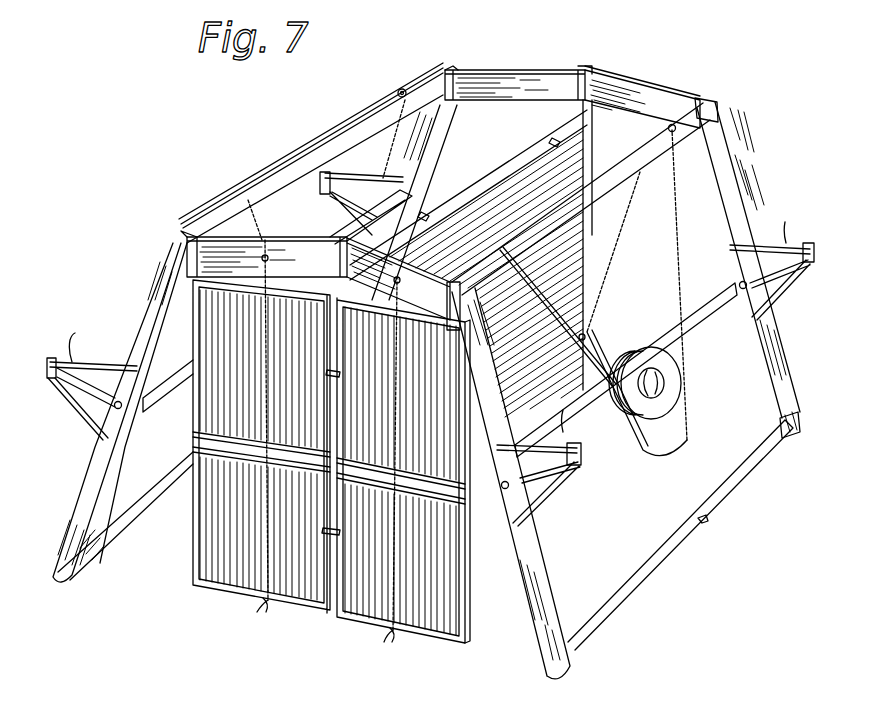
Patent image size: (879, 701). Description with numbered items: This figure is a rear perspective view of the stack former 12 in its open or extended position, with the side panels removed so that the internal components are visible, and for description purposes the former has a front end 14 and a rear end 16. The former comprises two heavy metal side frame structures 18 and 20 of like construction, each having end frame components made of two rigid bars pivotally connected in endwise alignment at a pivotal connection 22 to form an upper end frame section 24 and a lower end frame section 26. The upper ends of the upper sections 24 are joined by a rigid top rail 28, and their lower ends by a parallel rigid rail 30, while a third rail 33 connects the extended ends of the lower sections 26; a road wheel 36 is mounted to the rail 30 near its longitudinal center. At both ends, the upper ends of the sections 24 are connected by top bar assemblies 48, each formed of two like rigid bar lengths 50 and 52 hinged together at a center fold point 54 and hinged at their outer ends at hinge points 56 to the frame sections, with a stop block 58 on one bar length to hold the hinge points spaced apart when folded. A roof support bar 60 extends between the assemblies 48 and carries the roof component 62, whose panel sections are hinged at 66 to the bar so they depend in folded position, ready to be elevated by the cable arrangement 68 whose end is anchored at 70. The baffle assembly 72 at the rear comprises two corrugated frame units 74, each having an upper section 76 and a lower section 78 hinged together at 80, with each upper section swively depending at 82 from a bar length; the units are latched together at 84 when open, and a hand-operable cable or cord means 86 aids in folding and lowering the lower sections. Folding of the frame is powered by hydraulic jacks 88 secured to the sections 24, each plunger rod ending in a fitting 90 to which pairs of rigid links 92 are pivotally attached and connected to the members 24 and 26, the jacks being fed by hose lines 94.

The stack former 12 is at (250, 165).
The front end 14 is at (705, 60).
The rear end 16 is at (105, 607).
The side frame structure 18 is at (745, 162).
The side frame structure 20 is at (430, 115).
The pivotal connection 22 is at (114, 408).
The upper end frame section 24 is at (447, 125).
The lower end frame section 26 is at (87, 463).
The top rail 28 is at (376, 118).
The rigid rail 30 is at (175, 375).
The ground rail 33 is at (108, 540).
The road wheel 36 is at (650, 418).
The top bar assembly 48 is at (535, 65).
The rigid bar length 50 is at (663, 98).
The rigid bar length 52 is at (485, 72).
The hinge 54 is at (583, 70).
The hinge point 56 is at (447, 70).
The stop block 58 is at (462, 345).
The roof support bar 60 is at (500, 160).
The roof component 62 is at (597, 148).
The hinge 66 is at (555, 138).
The cable arrangement 68 is at (595, 256).
The cable anchor 70 is at (705, 522).
The baffle assembly 72 is at (205, 598).
The frame unit 74 is at (193, 505).
The upper section 76 is at (198, 400).
The lower section 78 is at (193, 545).
The hinge 80 is at (193, 437).
The swivel connection 82 is at (267, 250).
The latch 84 is at (330, 375).
The cable or cord means 86 is at (256, 592).
The hydraulic jack 88 is at (55, 392).
The fitting 90 is at (50, 366).
The link 92 is at (95, 361).
The hose line 94 is at (73, 334).